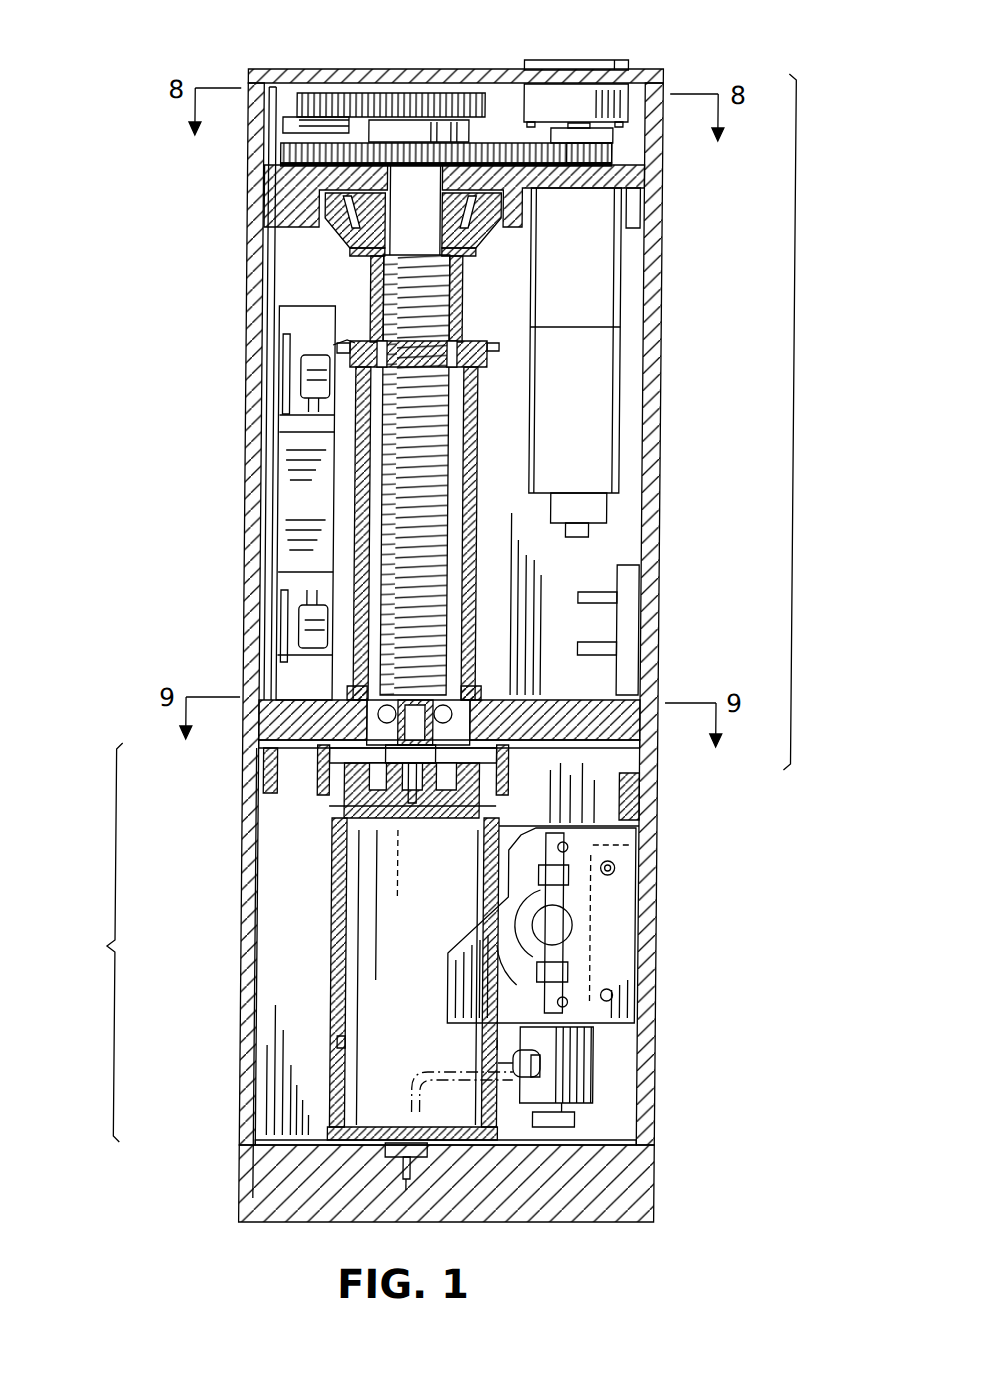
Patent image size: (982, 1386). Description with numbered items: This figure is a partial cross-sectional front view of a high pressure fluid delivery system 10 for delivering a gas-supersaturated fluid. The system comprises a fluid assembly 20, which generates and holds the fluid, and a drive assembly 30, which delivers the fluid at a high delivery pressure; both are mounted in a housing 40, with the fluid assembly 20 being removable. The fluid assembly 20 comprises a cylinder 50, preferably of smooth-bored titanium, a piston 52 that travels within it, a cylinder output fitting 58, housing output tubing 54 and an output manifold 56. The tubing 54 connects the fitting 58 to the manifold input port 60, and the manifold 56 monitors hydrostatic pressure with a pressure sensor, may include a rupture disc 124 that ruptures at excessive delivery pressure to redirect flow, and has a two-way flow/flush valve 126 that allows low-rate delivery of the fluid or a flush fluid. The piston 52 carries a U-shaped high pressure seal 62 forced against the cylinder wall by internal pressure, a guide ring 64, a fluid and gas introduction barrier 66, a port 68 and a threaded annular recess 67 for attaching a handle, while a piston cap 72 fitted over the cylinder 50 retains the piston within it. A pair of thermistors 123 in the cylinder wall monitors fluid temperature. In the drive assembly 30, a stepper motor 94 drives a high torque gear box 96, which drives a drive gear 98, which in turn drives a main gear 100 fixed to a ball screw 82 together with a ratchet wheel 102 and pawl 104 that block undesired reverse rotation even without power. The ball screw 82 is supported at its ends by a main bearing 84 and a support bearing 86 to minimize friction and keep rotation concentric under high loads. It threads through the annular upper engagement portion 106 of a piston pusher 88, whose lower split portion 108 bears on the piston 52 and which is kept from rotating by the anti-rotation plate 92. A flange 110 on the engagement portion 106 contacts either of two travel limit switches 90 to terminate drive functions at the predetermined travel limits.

The high pressure fluid delivery system 10 is at (700, 70).
The fluid assembly 20 is at (96, 942).
The drive assembly 30 is at (816, 422).
The housing 40 is at (238, 432).
The cylinder 50 is at (338, 917).
The piston 52 is at (361, 814).
The housing output tubing 54 is at (421, 1087).
The output manifold 56 is at (606, 973).
The cylinder output fitting 58 is at (410, 1158).
The manifold input port 60 is at (540, 1077).
The high pressure seal 62 is at (507, 815).
The guide ring 64 is at (515, 775).
The fluid and gas introduction barrier 66 is at (411, 820).
The threaded annular recess 67 is at (361, 806).
The port 68 is at (431, 735).
The piston cap 72 is at (515, 787).
The ball screw 82 is at (372, 297).
The main bearing 84 is at (344, 237).
The support bearing 86 is at (325, 690).
The piston pusher 88 is at (342, 485).
The travel limit switches 90 is at (319, 372).
The piston pusher anti-rotation plate 92 is at (295, 720).
The stepper motor 94 is at (600, 425).
The high torque gear box 96 is at (610, 266).
The drive gear 98 is at (618, 154).
The main gear 100 is at (290, 152).
The ratchet wheel 102 is at (389, 92).
The pawl 104 is at (384, 131).
The upper engagement portion 106 is at (358, 375).
The lower split portion 108 is at (355, 540).
The flange 110 is at (345, 340).
The thermistors 123 is at (344, 1041).
The rupture disc 124 is at (577, 1128).
The two-way flow/flush valve 126 is at (619, 860).